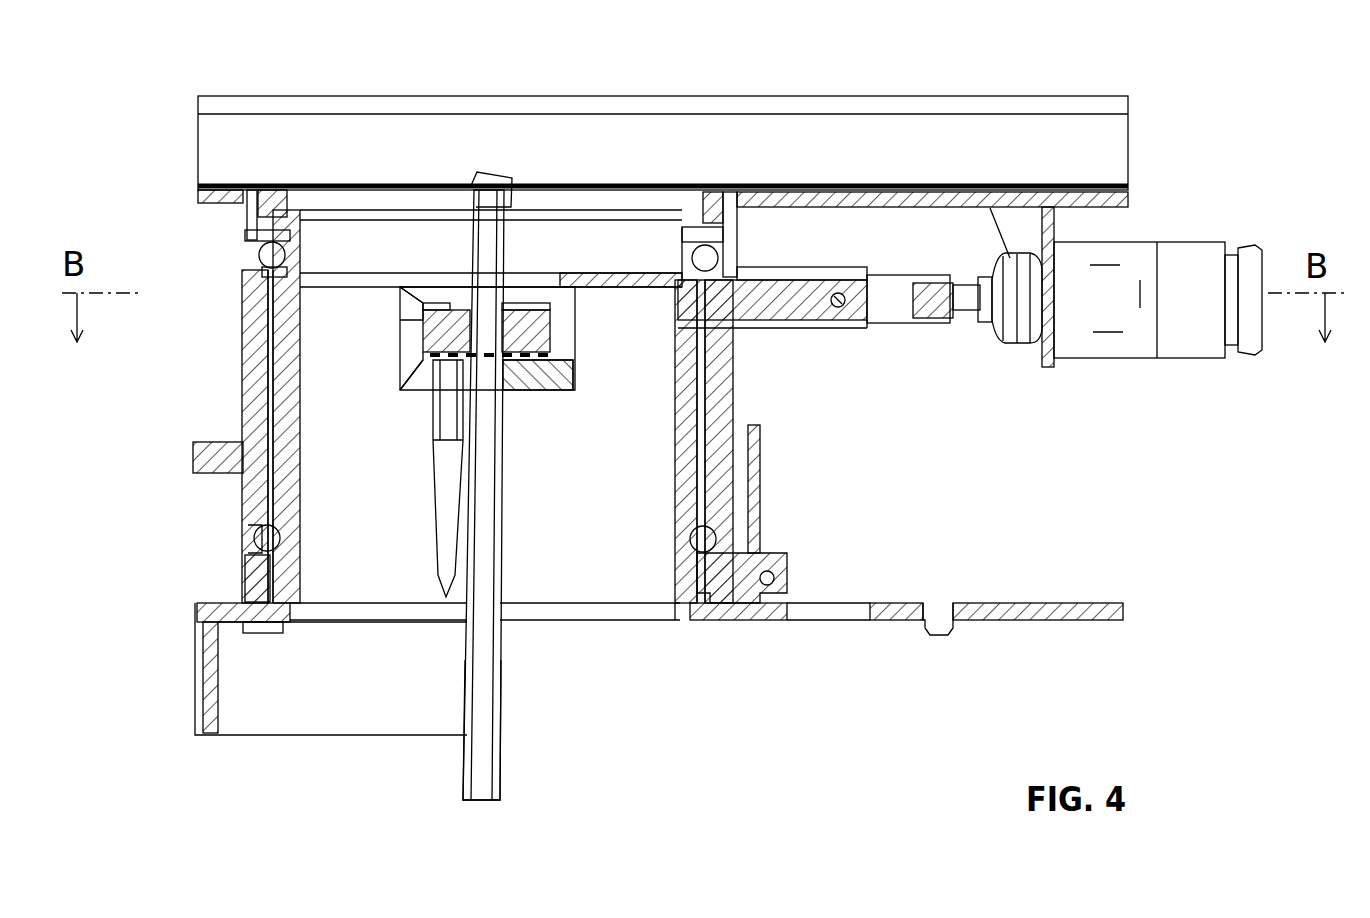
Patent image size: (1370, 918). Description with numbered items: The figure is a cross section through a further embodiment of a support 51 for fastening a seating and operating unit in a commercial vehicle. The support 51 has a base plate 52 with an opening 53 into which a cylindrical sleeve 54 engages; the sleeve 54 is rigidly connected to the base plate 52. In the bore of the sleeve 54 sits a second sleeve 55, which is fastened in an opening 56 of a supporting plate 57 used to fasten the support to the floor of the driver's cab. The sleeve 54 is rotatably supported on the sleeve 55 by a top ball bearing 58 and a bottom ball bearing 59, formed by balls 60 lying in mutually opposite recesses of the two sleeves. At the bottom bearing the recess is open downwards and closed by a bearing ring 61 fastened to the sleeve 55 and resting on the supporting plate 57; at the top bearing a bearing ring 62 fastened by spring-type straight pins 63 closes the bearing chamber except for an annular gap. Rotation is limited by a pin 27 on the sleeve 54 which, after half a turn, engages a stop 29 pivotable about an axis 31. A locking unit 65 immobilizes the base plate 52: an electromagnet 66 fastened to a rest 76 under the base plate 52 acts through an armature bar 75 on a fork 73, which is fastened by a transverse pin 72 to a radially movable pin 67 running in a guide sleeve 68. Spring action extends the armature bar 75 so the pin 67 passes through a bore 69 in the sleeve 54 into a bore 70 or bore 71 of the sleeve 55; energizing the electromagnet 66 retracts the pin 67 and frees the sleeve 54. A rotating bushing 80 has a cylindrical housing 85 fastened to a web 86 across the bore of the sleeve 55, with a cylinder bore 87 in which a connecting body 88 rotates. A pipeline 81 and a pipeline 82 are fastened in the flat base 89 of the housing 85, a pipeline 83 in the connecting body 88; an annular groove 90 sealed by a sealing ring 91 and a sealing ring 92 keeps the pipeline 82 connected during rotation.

The pin 27 is at (195, 455).
The stop 29 is at (762, 462).
The axis 31 is at (780, 556).
The support 51 is at (945, 85).
The base plate 52 is at (805, 118).
The opening 53 is at (722, 195).
The cylindrical sleeve 54 is at (245, 415).
The second sleeve 55 is at (278, 395).
The opening 56 is at (678, 622).
The supporting plate 57 is at (1000, 605).
The top ball bearing 58 is at (244, 263).
The bottom ball bearing 59 is at (254, 536).
The balls 60 is at (262, 270).
The bearing ring 61 is at (242, 582).
The bearing ring 62 is at (270, 190).
The spring-type straight pins 63 is at (258, 233).
The locking unit 65 is at (899, 358).
The electromagnet 66 is at (1110, 360).
The pin 67 is at (768, 328).
The guide sleeve 68 is at (805, 328).
The bore 69 is at (738, 255).
The bore 70 is at (690, 330).
The bore 71 is at (282, 300).
The transverse pin 72 is at (845, 307).
The fork 73 is at (888, 290).
The armature bar 75 is at (935, 320).
The rest 76 is at (1010, 235).
The rotating bushing 80 is at (487, 384).
The pipeline 81 is at (500, 655).
The pipeline 82 is at (440, 590).
The pipeline 83 is at (482, 190).
The cylindrical housing 85 is at (400, 365).
The web 86 is at (652, 287).
The cylinder bore 87 is at (530, 295).
The connecting body 88 is at (425, 330).
The base 89 is at (540, 392).
The annular groove 90 is at (553, 335).
The sealing ring 91 is at (573, 375).
The sealing ring 92 is at (518, 392).